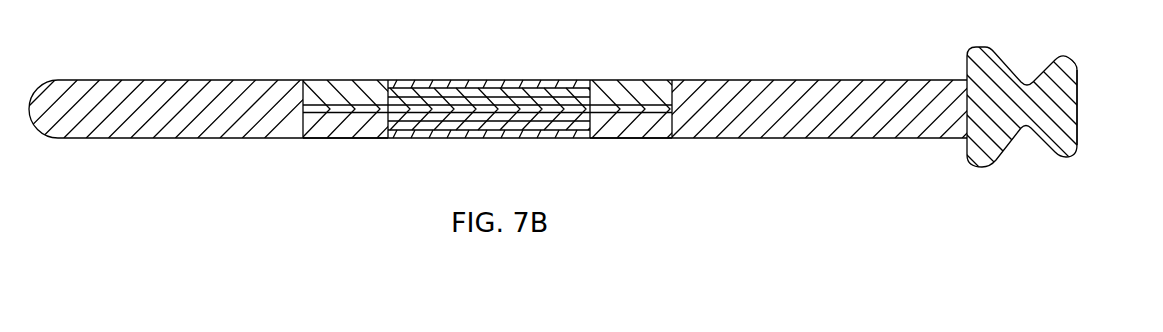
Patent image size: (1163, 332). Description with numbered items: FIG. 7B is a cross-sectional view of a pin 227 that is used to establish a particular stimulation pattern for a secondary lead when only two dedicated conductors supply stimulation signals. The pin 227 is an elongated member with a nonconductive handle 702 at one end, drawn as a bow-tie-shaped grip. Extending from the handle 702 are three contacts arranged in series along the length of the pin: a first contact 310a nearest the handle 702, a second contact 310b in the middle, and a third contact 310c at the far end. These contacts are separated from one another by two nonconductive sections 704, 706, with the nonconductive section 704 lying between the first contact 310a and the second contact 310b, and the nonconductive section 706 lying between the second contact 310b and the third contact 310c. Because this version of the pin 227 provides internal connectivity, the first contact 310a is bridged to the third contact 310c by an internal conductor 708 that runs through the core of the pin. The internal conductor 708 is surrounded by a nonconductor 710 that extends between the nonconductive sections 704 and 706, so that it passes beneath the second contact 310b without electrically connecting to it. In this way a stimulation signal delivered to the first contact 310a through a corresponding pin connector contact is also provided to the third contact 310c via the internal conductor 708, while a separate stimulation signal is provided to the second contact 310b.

The third contact 310c is at (168, 80).
The nonconductive section 706 is at (343, 80).
The nonconductor 710 is at (380, 116).
The second contact 310b is at (487, 80).
The nonconductive section 704 is at (627, 80).
The internal conductor 708 is at (611, 120).
The first contact 310a is at (736, 80).
The nonconductive handle 702 is at (978, 46).
The pin 227 is at (1096, 88).